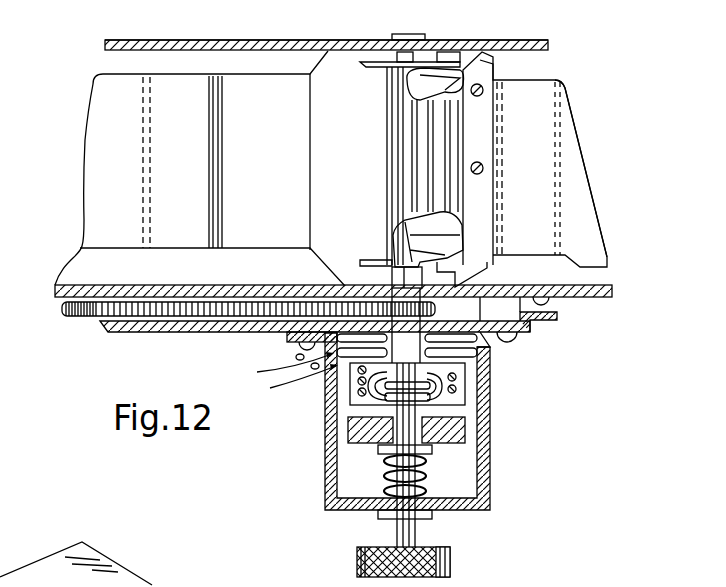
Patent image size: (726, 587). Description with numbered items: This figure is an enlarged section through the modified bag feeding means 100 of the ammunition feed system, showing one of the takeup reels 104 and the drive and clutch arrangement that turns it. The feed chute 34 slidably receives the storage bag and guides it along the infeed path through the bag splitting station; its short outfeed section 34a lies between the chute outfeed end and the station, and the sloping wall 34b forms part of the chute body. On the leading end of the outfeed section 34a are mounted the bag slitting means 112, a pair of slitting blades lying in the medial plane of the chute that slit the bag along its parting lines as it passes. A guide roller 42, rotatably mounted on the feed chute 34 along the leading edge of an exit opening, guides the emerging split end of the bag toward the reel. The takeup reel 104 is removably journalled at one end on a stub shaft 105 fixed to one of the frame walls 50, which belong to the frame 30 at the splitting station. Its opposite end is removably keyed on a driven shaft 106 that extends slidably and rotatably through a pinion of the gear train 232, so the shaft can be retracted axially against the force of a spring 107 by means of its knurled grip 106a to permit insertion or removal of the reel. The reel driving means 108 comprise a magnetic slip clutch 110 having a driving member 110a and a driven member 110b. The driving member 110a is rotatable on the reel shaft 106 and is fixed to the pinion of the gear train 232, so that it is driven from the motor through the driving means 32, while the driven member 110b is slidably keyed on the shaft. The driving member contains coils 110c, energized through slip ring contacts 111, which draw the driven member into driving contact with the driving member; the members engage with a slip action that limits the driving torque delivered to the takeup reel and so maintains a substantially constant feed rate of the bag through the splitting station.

The frame 30 is at (162, 36).
The frame wall 50 is at (258, 40).
The feed chute 34 is at (578, 186).
The feed chute outfeed section 34a is at (93, 82).
The housing sloped wall 34b is at (572, 138).
The modified bag feeding means 100 is at (428, 149).
The takeup reel 104 is at (395, 97).
The stub shaft 105 is at (418, 47).
The driven shaft 106 is at (397, 245).
The knurled grip 106a is at (450, 553).
The spring 107 is at (440, 467).
The reel driving means 108 is at (500, 427).
The magnetic slip clutch 110 is at (414, 402).
The driving member 110a is at (360, 388).
The driven member 110b is at (358, 430).
The coil 110c is at (455, 388).
The slip ring contact 111 is at (333, 378).
The bag slitting means 112 is at (482, 52).
The gear train 232 is at (442, 312).
The driving means 32 is at (172, 322).
The guide roller 42 is at (447, 148).